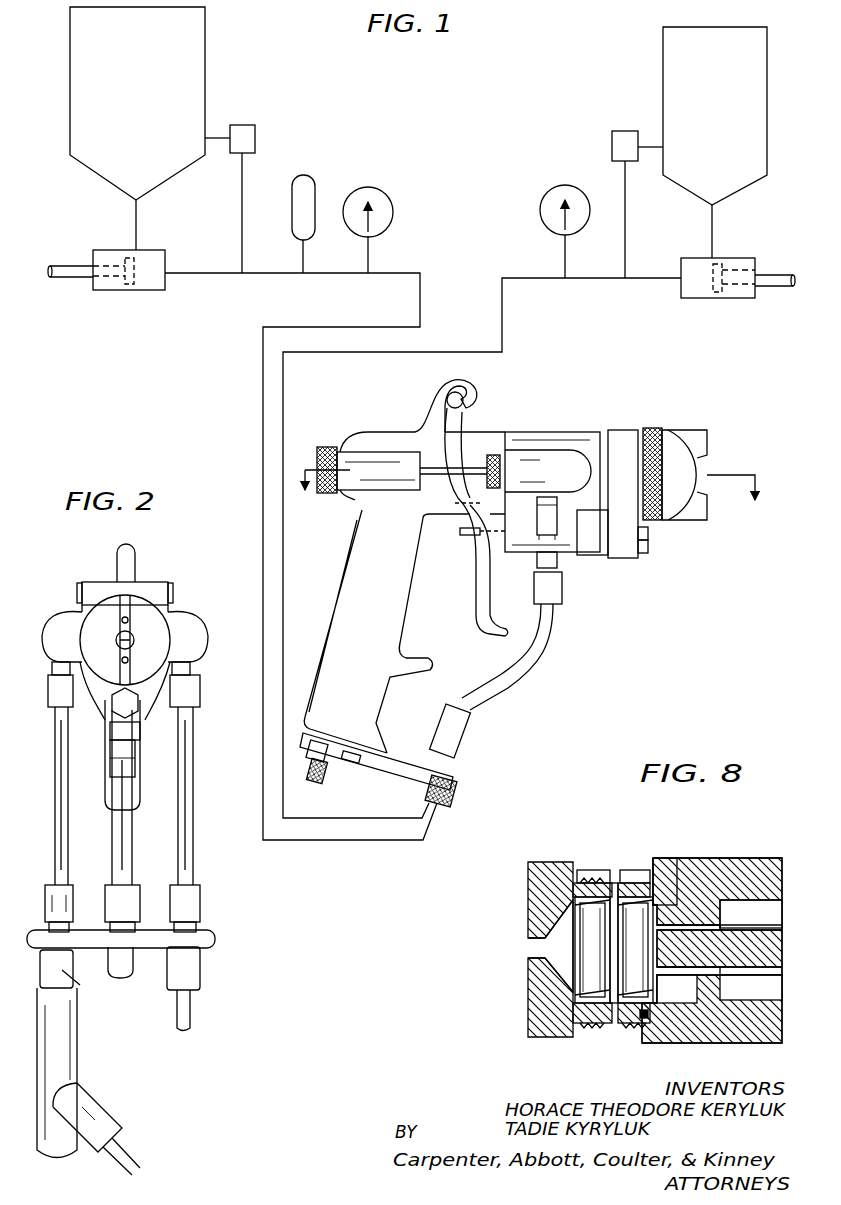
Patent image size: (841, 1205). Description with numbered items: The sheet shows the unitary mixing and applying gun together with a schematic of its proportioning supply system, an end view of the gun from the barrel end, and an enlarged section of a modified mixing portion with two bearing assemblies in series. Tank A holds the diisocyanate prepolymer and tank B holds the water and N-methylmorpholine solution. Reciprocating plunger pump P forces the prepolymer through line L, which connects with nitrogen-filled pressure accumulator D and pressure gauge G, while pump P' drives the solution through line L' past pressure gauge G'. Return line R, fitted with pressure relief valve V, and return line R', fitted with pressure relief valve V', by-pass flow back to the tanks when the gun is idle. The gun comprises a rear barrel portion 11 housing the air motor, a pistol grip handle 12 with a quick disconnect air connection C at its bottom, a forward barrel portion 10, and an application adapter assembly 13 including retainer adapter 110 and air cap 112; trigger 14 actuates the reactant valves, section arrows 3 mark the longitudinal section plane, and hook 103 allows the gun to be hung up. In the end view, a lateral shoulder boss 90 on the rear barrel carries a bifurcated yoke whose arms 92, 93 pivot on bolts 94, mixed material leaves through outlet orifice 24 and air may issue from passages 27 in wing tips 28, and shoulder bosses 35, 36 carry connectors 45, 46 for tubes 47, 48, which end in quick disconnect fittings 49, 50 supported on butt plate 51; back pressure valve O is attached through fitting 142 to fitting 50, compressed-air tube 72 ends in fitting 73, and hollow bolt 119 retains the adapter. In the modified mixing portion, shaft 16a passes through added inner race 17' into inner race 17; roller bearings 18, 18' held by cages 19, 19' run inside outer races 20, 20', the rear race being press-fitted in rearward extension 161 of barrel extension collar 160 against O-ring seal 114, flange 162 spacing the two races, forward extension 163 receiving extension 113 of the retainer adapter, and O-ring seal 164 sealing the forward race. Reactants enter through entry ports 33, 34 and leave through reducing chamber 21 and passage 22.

In FIG. 1, the tank A is at (137, 128).
In FIG. 1, the tank B is at (715, 142).
In FIG. 1, the pump P is at (106, 285).
In FIG. 1, the pump P' is at (738, 295).
In FIG. 1, the pressure relief valve V is at (230, 139).
In FIG. 1, the pressure relief valve V' is at (637, 146).
In FIG. 1, the line R is at (222, 213).
In FIG. 1, the line R' is at (645, 219).
In FIG. 1, the line L is at (301, 556).
In FIG. 2, the line L is at (194, 1010).
In FIG. 1, the line L' is at (482, 548).
In FIG. 2, the line L' is at (127, 1149).
In FIG. 1, the pressure accumulator D is at (302, 180).
In FIG. 1, the pressure gauge G is at (373, 217).
In FIG. 1, the pressure gauge G' is at (552, 222).
In FIG. 1, the quick disconnect connection C is at (323, 775).
In FIG. 2, the variable orifice back pressure valve O is at (80, 1050).
In FIG. 1, the section line 3 is at (530, 493).
In FIG. 1, the forward barrel portion 10 is at (568, 430).
In FIG. 8, the forward barrel portion 10 is at (735, 868).
In FIG. 1, the rear barrel portion 11 is at (385, 435).
In FIG. 1, the pistol grip type handle 12 is at (345, 578).
In FIG. 1, the application adapter assembly 13 is at (630, 430).
In FIG. 1, the trigger 14 is at (472, 598).
In FIG. 2, the trigger 14 is at (140, 790).
In FIG. 2, the hook 103 is at (132, 545).
In FIG. 2, the shoulder boss 90 is at (150, 585).
In FIG. 2, the bolts 94 is at (173, 588).
In FIG. 2, the arm 93 is at (80, 605).
In FIG. 2, the arm 92 is at (168, 605).
In FIG. 2, the shoulder boss 36 is at (56, 630).
In FIG. 2, the shoulder boss 35 is at (192, 638).
In FIG. 2, the outlet orifice 24 is at (133, 641).
In FIG. 2, the passages 27 is at (120, 660).
In FIG. 2, the wing tips 28 is at (130, 666).
In FIG. 2, the air cap 112 is at (158, 648).
In FIG. 2, the connector 46 is at (48, 690).
In FIG. 2, the connector 45 is at (200, 690).
In FIG. 2, the hollow bolt 119 is at (112, 705).
In FIG. 2, the tube 48 is at (58, 797).
In FIG. 2, the tube 72 is at (115, 828).
In FIG. 2, the tube 47 is at (190, 826).
In FIG. 2, the butt plate 51 is at (212, 937).
In FIG. 2, the quick disconnect fitting 50 is at (60, 952).
In FIG. 2, the fitting 142 is at (86, 983).
In FIG. 2, the quick disconnect fitting 73 is at (118, 960).
In FIG. 2, the quick disconnect fitting 49 is at (185, 953).
In FIG. 8, the retainer adapter 110 is at (528, 887).
In FIG. 8, the passage 22 is at (528, 950).
In FIG. 8, the reducing chamber 21 is at (560, 946).
In FIG. 8, the O-ring seal 164 is at (605, 880).
In FIG. 8, the forward extension 163 is at (592, 870).
In FIG. 8, the flange 162 is at (615, 882).
In FIG. 8, the rearward extension 161 is at (636, 870).
In FIG. 8, the tapered roller bearings 18 is at (592, 950).
In FIG. 8, the inner race 17 is at (592, 950).
In FIG. 8, the cage 19 is at (592, 947).
In FIG. 8, the cage 19' is at (635, 950).
In FIG. 8, the inner race 17' is at (636, 950).
In FIG. 8, the roller bearings 18' is at (635, 947).
In FIG. 8, the barrel extension collar 160 is at (588, 1018).
In FIG. 8, the outer race 20 is at (579, 1043).
In FIG. 8, the cylindrical extension 113 is at (630, 1022).
In FIG. 8, the outer race 20' is at (625, 1043).
In FIG. 8, the O-ring seal 114 is at (645, 1020).
In FIG. 8, the mixing chamber entry port 34 is at (668, 898).
In FIG. 8, the shaft 16a is at (722, 942).
In FIG. 8, the mixing chamber entry port 33 is at (683, 989).